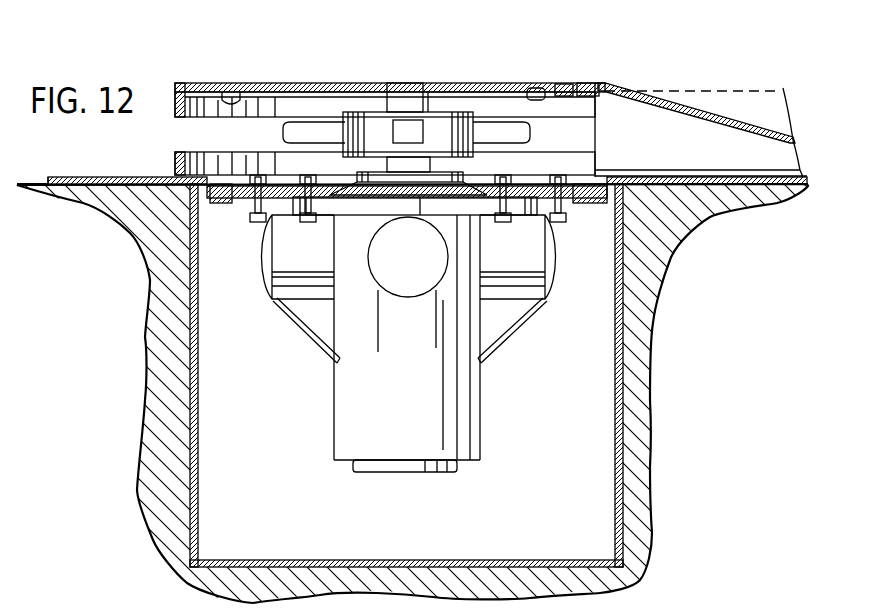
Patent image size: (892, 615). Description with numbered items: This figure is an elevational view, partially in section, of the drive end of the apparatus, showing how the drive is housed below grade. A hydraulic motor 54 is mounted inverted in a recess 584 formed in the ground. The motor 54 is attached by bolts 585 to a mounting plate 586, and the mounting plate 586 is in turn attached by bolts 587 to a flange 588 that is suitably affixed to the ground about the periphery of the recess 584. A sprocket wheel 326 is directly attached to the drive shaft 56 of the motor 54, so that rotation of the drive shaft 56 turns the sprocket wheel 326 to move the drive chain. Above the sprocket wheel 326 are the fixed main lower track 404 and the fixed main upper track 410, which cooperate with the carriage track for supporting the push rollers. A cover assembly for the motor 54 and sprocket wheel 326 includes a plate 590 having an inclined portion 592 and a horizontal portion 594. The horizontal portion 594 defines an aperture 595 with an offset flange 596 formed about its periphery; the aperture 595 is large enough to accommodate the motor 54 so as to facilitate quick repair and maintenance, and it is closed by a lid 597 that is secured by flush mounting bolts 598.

The hydraulic motor 54 is at (420, 408).
The drive shaft 56 is at (402, 84).
The sprocket wheel 326 is at (283, 132).
The main lower track 404 is at (175, 167).
The main upper track 410 is at (175, 113).
The recess 584 is at (198, 522).
The bolts 585 is at (333, 178).
The mounting plate 586 is at (282, 205).
The bolts 587 is at (557, 180).
The flange 588 is at (212, 188).
The plate 590 is at (701, 106).
The inclined portion 592 is at (722, 118).
The horizontal portion 594 is at (584, 83).
The aperture 595 is at (532, 86).
The offset flange 596 is at (229, 100).
The lid 597 is at (333, 83).
The flush mounting bolts 598 is at (565, 84).